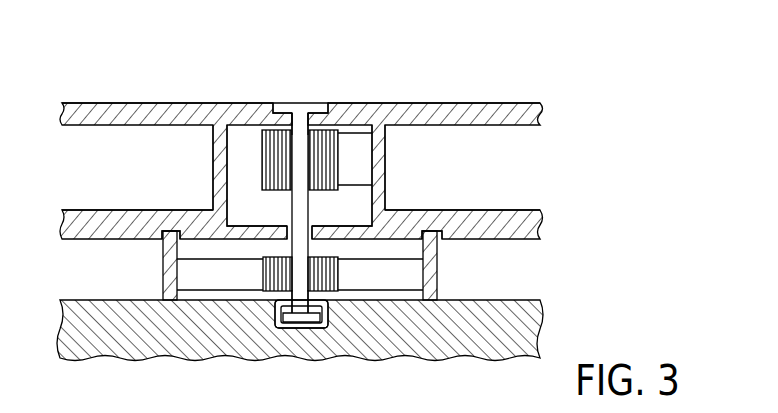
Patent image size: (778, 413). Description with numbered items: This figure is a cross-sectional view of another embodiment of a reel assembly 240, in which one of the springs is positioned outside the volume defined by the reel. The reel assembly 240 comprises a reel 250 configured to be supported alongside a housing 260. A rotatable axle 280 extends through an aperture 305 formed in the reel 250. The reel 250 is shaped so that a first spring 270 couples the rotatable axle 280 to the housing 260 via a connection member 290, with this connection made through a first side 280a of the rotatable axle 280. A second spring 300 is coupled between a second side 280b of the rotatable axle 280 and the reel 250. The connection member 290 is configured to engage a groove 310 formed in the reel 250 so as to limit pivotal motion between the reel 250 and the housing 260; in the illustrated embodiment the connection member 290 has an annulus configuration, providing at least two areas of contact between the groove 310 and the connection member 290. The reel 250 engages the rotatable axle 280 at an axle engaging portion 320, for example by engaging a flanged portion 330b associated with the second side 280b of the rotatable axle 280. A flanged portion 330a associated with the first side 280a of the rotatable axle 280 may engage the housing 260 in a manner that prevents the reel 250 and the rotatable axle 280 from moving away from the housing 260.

The reel assembly 240 is at (524, 66).
The reel 250 is at (403, 217).
The housing 260 is at (163, 325).
The first spring 270 is at (343, 280).
The rotatable axle 280 is at (307, 318).
The first side of the rotatable axle 280a is at (302, 300).
The second side of the rotatable axle 280b is at (307, 118).
The connection member 290 is at (163, 262).
The second spring 300 is at (260, 153).
The aperture 305 is at (313, 222).
The groove 310 is at (168, 228).
The axle engaging portion 320 is at (272, 106).
The flanged portion 330a is at (273, 312).
The flanged portion 330b is at (300, 108).